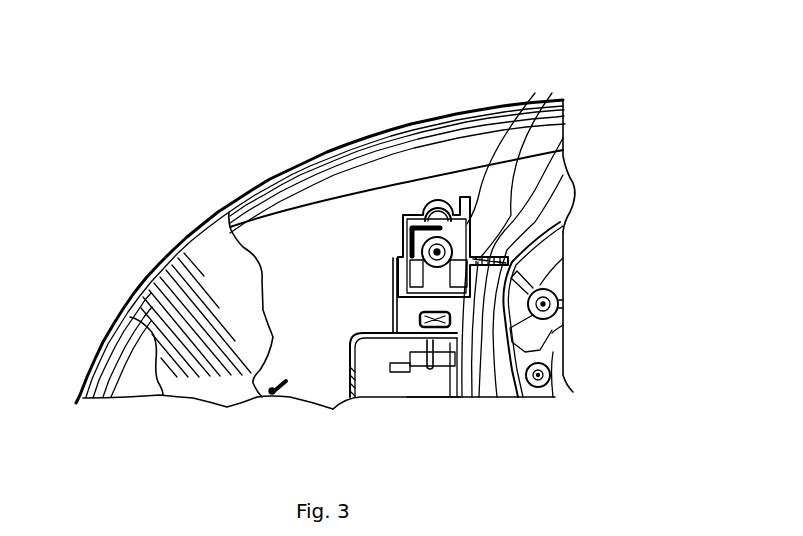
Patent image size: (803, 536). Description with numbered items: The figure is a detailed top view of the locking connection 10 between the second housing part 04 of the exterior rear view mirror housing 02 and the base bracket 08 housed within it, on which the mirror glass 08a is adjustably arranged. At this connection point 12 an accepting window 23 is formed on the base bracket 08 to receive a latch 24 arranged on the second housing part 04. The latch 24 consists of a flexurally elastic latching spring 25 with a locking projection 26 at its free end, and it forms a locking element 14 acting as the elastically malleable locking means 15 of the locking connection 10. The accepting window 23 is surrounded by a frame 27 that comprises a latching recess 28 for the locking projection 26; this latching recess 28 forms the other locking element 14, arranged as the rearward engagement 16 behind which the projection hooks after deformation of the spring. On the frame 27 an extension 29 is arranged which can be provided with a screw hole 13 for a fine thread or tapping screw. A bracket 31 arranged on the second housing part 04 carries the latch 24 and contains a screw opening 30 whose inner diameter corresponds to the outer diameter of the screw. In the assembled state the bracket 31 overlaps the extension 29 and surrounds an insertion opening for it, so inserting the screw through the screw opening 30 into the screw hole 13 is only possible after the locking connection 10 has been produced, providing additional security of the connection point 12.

The exterior rear view mirror housing 02 is at (155, 258).
The second housing part 04 is at (110, 327).
The base bracket 08 is at (573, 392).
The mirror glass 08a is at (147, 276).
The locking connection 10 is at (375, 206).
The connection point 12 is at (408, 192).
The screw hole 13 is at (530, 150).
The locking element 14 is at (385, 397).
The locking means 15 is at (403, 392).
The rearward engagement 16 is at (333, 410).
The accepting window 23 is at (493, 390).
The latch 24 is at (397, 263).
The latching spring 25 is at (577, 191).
The locking projection 26 is at (464, 390).
The frame 27 is at (397, 300).
The latching recess 28 is at (458, 390).
The extension 29 is at (433, 207).
The screw opening 30 is at (535, 103).
The bracket 31 is at (570, 168).